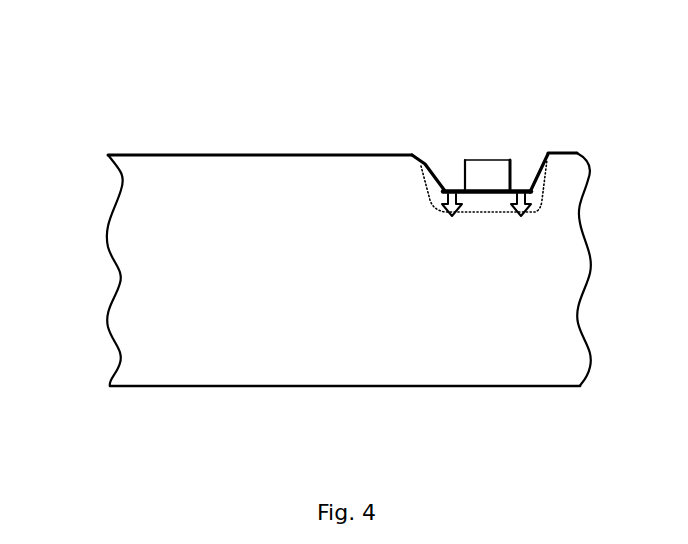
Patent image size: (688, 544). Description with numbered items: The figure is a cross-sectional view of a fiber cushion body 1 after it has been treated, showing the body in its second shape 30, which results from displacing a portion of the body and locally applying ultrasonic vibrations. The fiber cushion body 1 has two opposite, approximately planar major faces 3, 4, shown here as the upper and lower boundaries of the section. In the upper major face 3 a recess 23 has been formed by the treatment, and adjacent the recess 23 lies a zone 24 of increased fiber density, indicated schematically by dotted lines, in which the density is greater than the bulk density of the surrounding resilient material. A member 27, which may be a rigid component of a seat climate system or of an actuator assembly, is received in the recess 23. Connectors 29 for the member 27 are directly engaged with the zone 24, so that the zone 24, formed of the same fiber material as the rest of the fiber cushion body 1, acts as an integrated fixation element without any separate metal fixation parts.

The fiber cushion body 1 is at (46, 65).
The major face 3 is at (137, 155).
The major face 4 is at (163, 386).
The recess 23 is at (432, 172).
The zone having increased fiber density 24 is at (430, 196).
The member 27 is at (510, 160).
The connectors 29 is at (448, 213).
The second shape 30 is at (96, 146).